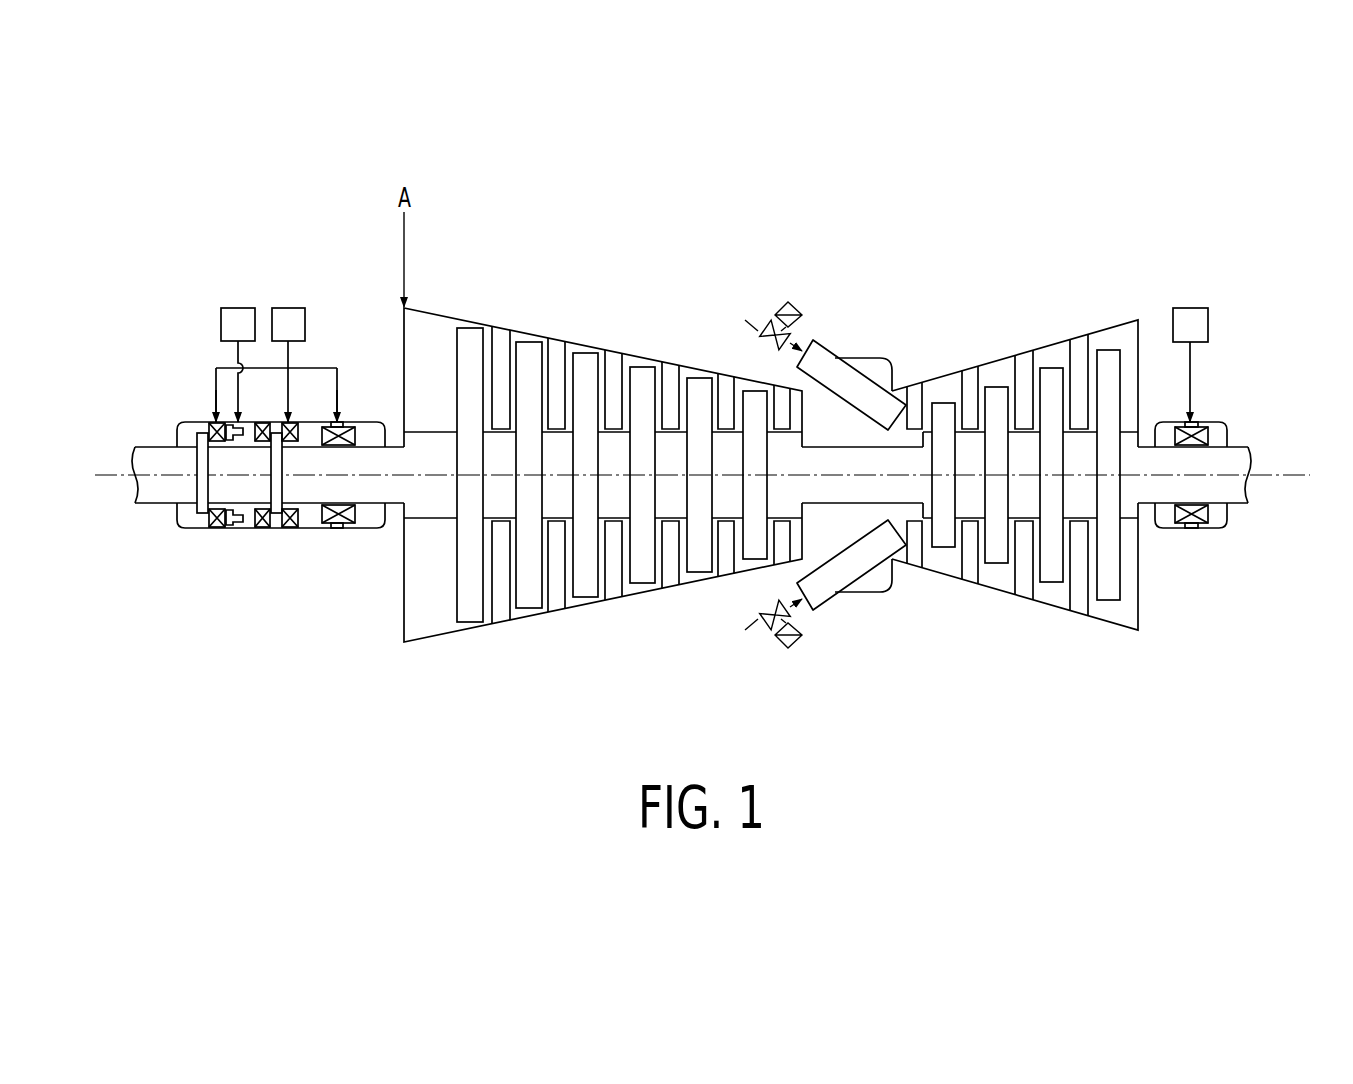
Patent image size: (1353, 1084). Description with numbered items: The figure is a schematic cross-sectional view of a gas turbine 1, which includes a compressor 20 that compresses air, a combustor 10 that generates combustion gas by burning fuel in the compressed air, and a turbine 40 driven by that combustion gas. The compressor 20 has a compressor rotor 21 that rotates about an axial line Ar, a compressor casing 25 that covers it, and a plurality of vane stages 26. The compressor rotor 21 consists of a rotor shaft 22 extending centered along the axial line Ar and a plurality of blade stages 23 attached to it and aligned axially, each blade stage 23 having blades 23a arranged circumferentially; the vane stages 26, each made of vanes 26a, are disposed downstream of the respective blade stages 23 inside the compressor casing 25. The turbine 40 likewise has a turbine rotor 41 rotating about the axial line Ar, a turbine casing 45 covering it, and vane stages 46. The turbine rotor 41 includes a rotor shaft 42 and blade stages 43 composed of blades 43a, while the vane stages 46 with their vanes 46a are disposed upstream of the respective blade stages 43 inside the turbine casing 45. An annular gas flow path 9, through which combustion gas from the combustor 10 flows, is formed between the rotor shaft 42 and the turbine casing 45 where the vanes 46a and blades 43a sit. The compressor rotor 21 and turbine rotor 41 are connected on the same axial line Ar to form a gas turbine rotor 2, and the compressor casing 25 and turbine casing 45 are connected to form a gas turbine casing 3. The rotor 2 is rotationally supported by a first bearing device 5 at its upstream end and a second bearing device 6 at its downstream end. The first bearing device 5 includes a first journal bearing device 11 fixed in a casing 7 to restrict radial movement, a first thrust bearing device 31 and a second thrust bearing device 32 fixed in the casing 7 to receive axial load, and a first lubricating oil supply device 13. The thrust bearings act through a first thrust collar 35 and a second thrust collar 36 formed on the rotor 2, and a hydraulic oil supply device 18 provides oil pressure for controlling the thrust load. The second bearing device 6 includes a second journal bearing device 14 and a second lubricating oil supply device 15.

The gas turbine 1 is at (1150, 249).
The gas turbine rotor 2 is at (850, 503).
The gas turbine casing 3 is at (858, 358).
The first bearing device 5 is at (203, 311).
The second bearing device 6 is at (1218, 407).
The casing 7 is at (177, 524).
The gas flow path 9 is at (983, 410).
The combustor 10 is at (826, 345).
The first journal bearing device 11 is at (341, 524).
The first lubricating oil supply device 13 is at (288, 307).
The second journal bearing device 14 is at (1180, 432).
The second lubricating oil supply device 15 is at (1193, 308).
The hydraulic oil supply device 18 is at (233, 307).
The compressor 20 is at (643, 332).
The compressor rotor 21 is at (687, 700).
The rotor shaft 22 is at (522, 495).
The blade stages 23 is at (598, 521).
The blades 23a is at (468, 603).
The compressor casing 25 is at (588, 343).
The vane stages 26 is at (630, 421).
The vanes 26a is at (501, 474).
The first thrust bearing device 31 is at (279, 531).
The second thrust bearing device 32 is at (218, 531).
The first thrust collar 35 is at (277, 514).
The second thrust collar 36 is at (204, 514).
The turbine 40 is at (1100, 323).
The turbine rotor 41 is at (1165, 700).
The rotor shaft 42 is at (1012, 503).
The blade stages 43 is at (1034, 506).
The blades 43a is at (943, 475).
The turbine casing 45 is at (1048, 347).
The vane stages 46 is at (997, 432).
The vanes 46a is at (914, 474).
The axial line Ar is at (1300, 478).